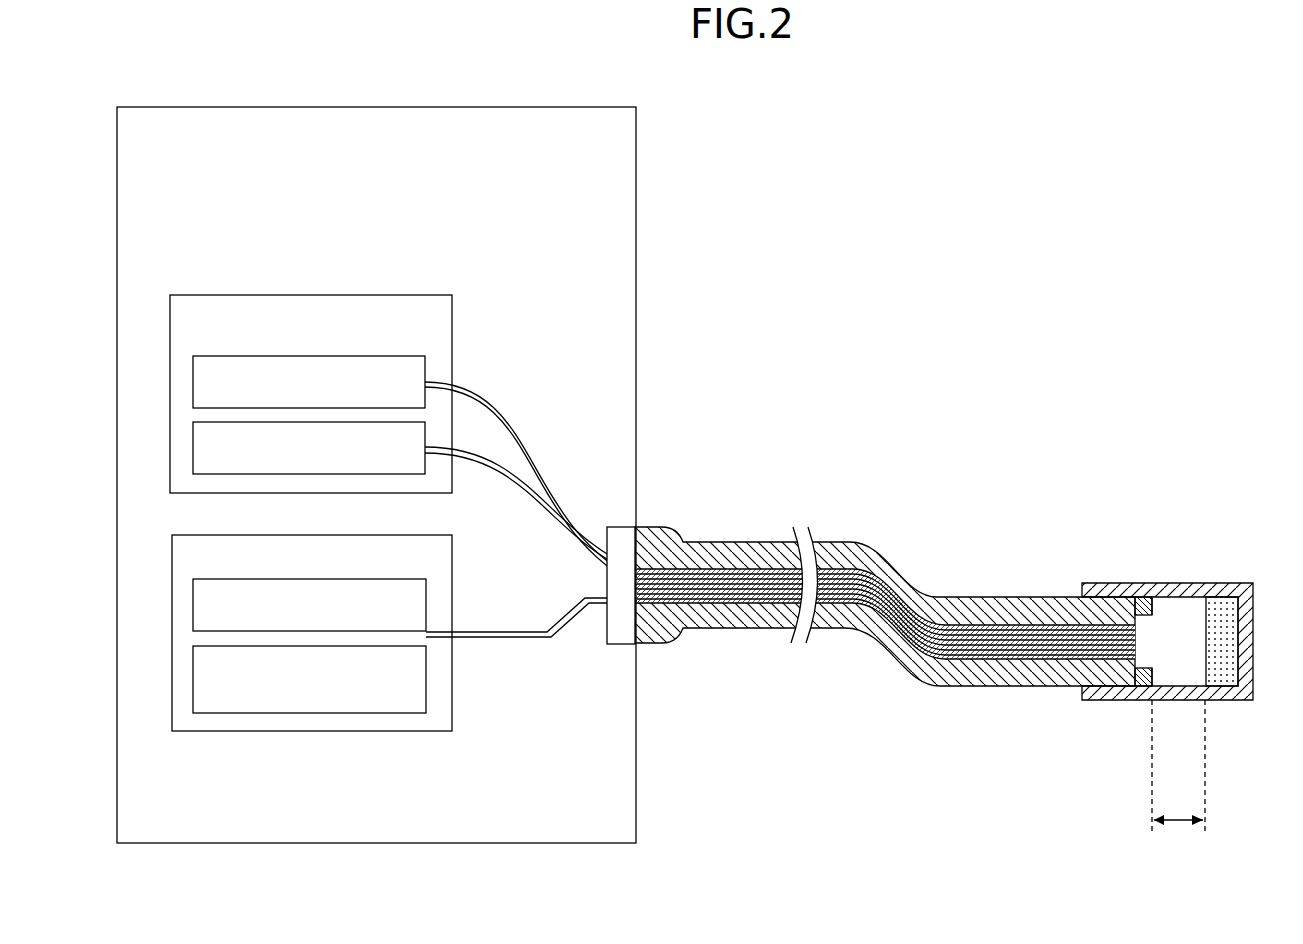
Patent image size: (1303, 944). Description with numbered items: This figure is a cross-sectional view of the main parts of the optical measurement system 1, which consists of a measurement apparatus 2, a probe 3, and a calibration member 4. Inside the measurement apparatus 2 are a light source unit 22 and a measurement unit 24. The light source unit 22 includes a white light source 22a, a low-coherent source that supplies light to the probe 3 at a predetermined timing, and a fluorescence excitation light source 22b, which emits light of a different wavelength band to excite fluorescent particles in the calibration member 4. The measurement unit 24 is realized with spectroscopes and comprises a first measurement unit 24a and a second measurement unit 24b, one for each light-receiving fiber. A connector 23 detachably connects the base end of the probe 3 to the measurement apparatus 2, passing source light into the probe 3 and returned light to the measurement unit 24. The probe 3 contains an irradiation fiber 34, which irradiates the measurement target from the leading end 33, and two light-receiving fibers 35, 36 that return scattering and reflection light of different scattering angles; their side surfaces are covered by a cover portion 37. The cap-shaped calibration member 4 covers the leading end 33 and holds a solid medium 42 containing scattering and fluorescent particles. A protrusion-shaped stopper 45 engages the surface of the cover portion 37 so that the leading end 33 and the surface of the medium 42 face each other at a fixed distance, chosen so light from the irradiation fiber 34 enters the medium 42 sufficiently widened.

The optical measurement system 1 is at (982, 268).
The measurement apparatus 2 is at (579, 90).
The probe 3 is at (885, 612).
The calibration member 4 is at (1125, 580).
The light source unit 22 is at (399, 537).
The white light source 22a is at (193, 604).
The fluorescence excitation light source 22b is at (193, 675).
The connector 23 is at (605, 624).
The measurement unit 24 is at (399, 295).
The first measurement unit 24a is at (193, 383).
The second measurement unit 24b is at (193, 448).
The leading end 33 is at (1137, 692).
The irradiation fiber 34 is at (733, 598).
The light-receiving fiber 35 is at (712, 583).
The light-receiving fiber 36 is at (757, 570).
The cover portion 37 is at (877, 562).
The medium 42 is at (1220, 616).
The stopper 45 is at (1158, 612).